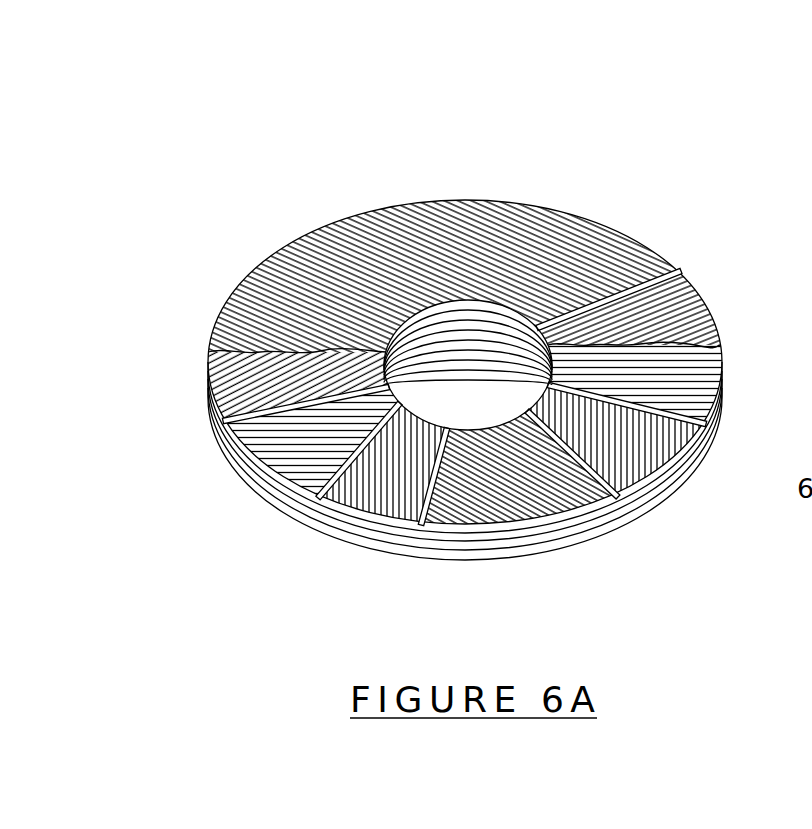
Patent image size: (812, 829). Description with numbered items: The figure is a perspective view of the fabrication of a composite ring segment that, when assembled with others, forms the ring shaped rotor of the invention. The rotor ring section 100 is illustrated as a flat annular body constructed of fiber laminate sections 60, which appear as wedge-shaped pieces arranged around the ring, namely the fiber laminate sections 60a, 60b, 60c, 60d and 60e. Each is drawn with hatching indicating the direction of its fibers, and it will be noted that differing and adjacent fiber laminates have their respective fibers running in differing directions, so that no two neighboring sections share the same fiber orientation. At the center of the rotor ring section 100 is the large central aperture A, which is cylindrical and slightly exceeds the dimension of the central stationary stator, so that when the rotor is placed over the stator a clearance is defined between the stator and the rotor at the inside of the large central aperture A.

The fiber laminate sections 60 is at (450, 230).
The fiber laminate section 60a is at (297, 273).
The fiber laminate section 60b is at (237, 380).
The fiber laminate section 60c is at (277, 426).
The fiber laminate section 60d is at (385, 487).
The fiber laminate section 60e is at (530, 499).
The rotor ring section 100 is at (688, 470).
The large central aperture A is at (443, 347).